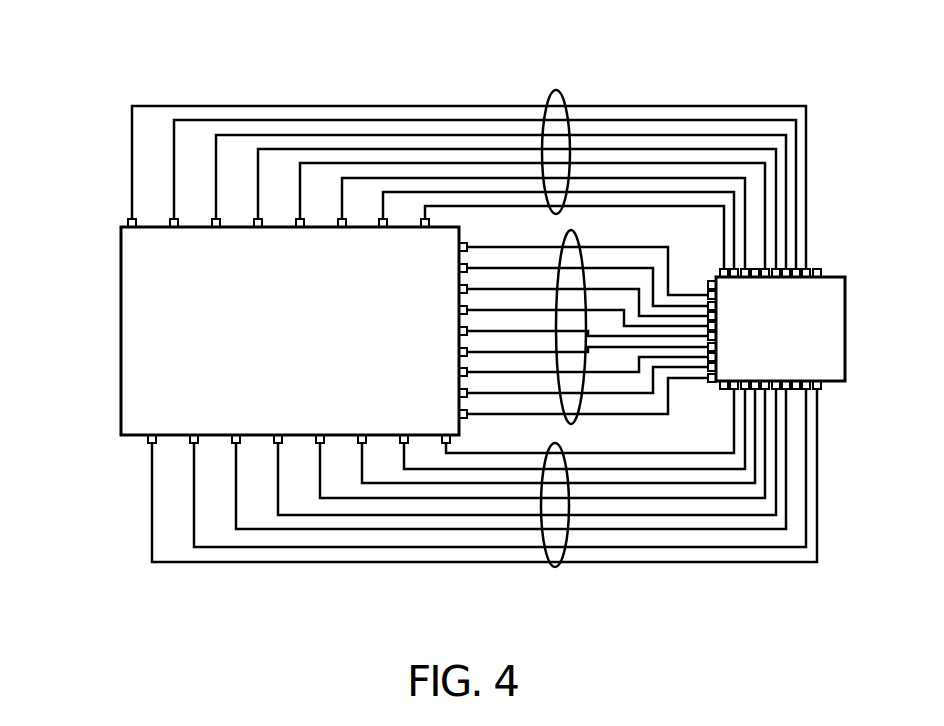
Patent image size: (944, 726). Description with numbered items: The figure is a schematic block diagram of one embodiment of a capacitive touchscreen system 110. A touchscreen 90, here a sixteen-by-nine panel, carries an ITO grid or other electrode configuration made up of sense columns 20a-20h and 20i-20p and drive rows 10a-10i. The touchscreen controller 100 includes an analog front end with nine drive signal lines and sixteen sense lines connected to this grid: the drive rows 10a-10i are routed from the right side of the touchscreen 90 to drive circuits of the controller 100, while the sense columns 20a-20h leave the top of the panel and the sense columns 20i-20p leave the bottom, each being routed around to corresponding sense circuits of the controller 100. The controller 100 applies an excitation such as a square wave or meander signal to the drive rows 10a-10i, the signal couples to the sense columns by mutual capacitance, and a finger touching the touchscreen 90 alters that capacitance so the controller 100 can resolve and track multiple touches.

The capacitive touchscreen system 110 is at (100, 77).
The touchscreen 90 is at (148, 313).
The touchscreen controller 100 is at (845, 330).
The sense columns 20a-20h is at (556, 90).
The drive rows 10a-10i is at (573, 230).
The sense columns 20i-20p is at (555, 567).